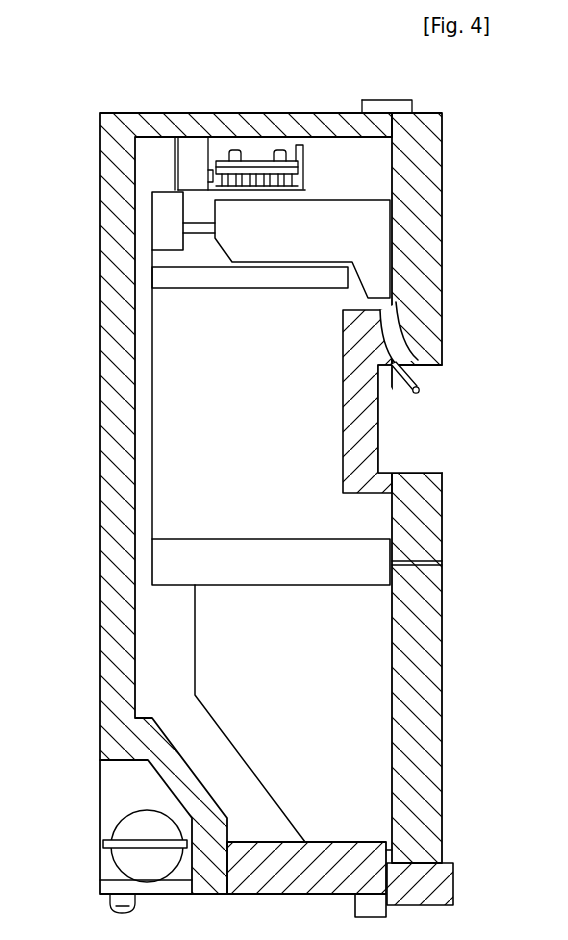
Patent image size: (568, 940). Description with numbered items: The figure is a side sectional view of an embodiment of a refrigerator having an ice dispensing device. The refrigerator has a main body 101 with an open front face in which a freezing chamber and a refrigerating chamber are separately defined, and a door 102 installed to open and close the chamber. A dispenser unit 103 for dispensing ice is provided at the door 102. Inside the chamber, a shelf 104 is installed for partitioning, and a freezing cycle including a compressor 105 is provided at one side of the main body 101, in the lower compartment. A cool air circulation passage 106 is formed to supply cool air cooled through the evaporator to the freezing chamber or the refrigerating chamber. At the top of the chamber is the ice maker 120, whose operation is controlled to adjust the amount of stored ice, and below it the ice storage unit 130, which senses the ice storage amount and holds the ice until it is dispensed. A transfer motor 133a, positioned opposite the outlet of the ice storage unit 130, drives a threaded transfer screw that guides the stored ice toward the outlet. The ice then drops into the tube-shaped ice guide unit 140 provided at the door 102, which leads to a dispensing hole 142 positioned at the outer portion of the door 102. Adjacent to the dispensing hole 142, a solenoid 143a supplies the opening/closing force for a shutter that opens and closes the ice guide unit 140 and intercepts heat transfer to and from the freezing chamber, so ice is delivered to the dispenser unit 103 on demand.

The main body 101 is at (118, 171).
The door 102 is at (412, 186).
The dispenser unit 103 is at (417, 448).
The shelf 104 is at (185, 563).
The compressor 105 is at (143, 866).
The cool air circulation passage 106 is at (146, 441).
The ice maker 120 is at (310, 152).
The ice storage unit 130 is at (247, 241).
The transfer motor 133a is at (168, 233).
The ice guide unit 140 is at (392, 333).
The dispensing hole 142 is at (420, 361).
The solenoid 143a is at (419, 391).